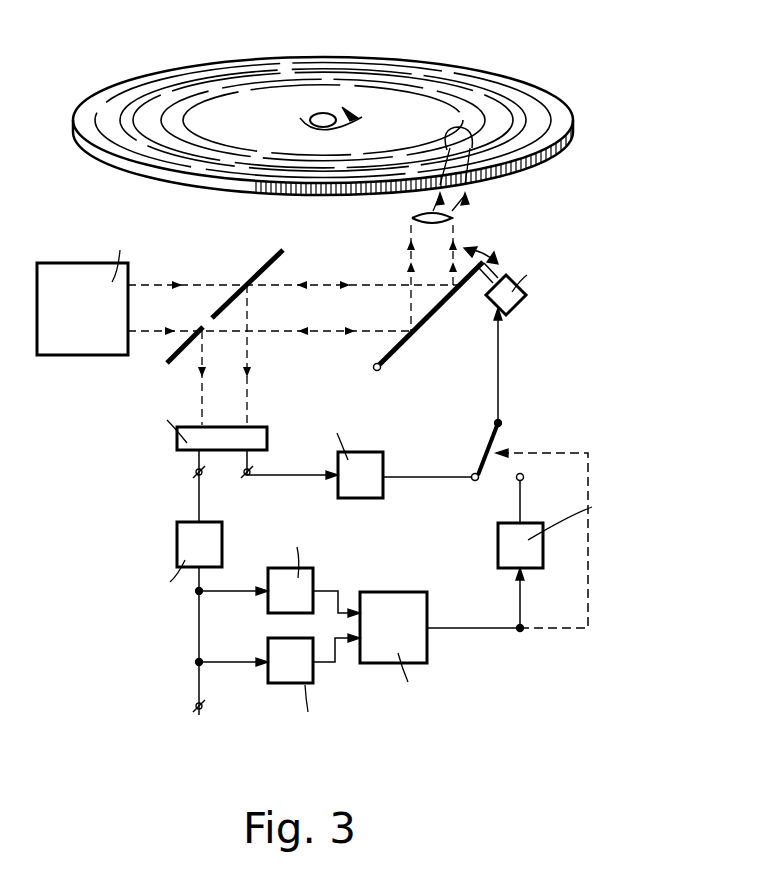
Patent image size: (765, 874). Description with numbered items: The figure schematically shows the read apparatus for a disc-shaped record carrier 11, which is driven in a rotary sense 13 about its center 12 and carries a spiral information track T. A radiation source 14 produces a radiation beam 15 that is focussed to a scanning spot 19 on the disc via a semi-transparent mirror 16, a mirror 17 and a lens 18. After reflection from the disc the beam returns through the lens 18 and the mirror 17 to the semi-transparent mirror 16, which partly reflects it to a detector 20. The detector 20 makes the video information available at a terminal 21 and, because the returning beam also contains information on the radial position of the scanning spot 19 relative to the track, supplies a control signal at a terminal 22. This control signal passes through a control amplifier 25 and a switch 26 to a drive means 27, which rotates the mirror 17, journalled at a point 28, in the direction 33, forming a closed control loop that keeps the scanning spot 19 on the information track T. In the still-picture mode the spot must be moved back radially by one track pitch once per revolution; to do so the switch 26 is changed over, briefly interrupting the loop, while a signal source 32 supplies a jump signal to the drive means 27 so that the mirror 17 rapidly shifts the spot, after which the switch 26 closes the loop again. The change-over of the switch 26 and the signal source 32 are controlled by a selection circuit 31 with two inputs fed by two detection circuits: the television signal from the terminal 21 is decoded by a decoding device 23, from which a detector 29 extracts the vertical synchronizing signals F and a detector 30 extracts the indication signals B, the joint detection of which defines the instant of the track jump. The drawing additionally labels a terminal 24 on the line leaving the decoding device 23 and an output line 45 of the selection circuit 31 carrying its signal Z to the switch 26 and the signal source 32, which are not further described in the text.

The disc-shaped record carrier 11 is at (562, 117).
The center 12 is at (318, 112).
The rotary sense 13 is at (362, 117).
The radiation source 14 is at (78, 355).
The radiation beam 15 is at (200, 289).
The semi-transparent mirror 16 is at (286, 250).
The mirror 17 is at (458, 287).
The lens 18 is at (455, 216).
The scanning spot 19 is at (473, 127).
The detector 20 is at (268, 438).
The terminal 21 is at (196, 478).
The terminal 22 is at (244, 478).
The decoding device 23 is at (177, 548).
The output signal line 24 is at (201, 712).
The control amplifier 25 is at (366, 452).
The switch 26 is at (490, 448).
The drive means 27 is at (516, 308).
The point 28 is at (379, 370).
The detector 29 is at (279, 570).
The detector 30 is at (290, 685).
The selection circuit 31 is at (388, 663).
The signal source 32 is at (498, 553).
The direction 33 is at (488, 257).
The output line Z of selection circuit 45 is at (430, 628).
The spiral information track T is at (530, 97).
The vertical synchronizing signals F is at (338, 591).
The indication signals B is at (335, 662).
The jump control signal Z is at (469, 608).